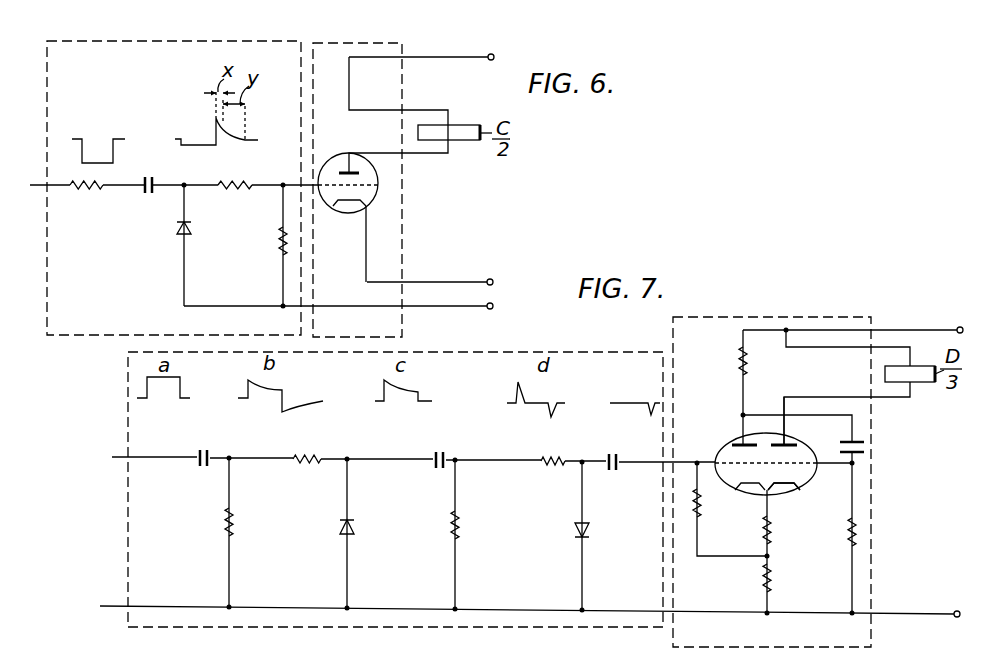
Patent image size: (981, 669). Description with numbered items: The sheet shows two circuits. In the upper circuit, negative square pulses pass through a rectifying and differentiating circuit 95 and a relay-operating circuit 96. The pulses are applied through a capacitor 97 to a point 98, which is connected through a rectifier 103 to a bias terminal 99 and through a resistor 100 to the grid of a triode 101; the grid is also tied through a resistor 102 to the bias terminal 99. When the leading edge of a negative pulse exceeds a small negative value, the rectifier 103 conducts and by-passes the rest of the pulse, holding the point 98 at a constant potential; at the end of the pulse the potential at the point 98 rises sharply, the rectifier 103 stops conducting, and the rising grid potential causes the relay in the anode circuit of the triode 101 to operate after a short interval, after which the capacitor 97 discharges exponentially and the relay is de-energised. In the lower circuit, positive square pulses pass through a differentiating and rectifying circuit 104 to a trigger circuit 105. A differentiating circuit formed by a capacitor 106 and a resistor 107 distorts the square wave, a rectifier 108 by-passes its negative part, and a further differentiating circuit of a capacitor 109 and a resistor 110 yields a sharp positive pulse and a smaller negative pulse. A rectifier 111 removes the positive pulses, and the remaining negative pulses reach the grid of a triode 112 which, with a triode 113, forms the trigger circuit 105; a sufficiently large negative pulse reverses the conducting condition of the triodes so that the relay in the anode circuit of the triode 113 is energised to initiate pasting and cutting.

In FIG. 6, the rectifying and differentiating circuit 95 is at (99, 41).
In FIG. 6, the relay-operating circuit 96 is at (336, 43).
In FIG. 6, the capacitor 97 is at (147, 193).
In FIG. 6, the point 98 is at (197, 178).
In FIG. 6, the bias terminal 99 is at (353, 307).
In FIG. 6, the resistor 100 is at (251, 186).
In FIG. 6, the triode 101 is at (378, 179).
In FIG. 6, the resistor 102 is at (287, 238).
In FIG. 6, the rectifier 103 is at (189, 228).
In FIG. 7, the differentiating and rectifying circuit 104 is at (472, 352).
In FIG. 7, the trigger circuit 105 is at (780, 317).
In FIG. 7, the capacitor 106 is at (207, 456).
In FIG. 7, the resistor 107 is at (233, 521).
In FIG. 7, the rectifier 108 is at (352, 529).
In FIG. 7, the capacitor 109 is at (446, 458).
In FIG. 7, the resistor 110 is at (460, 521).
In FIG. 7, the rectifier 111 is at (590, 530).
In FIG. 7, the triode 112 is at (735, 490).
In FIG. 7, the triode 113 is at (801, 491).